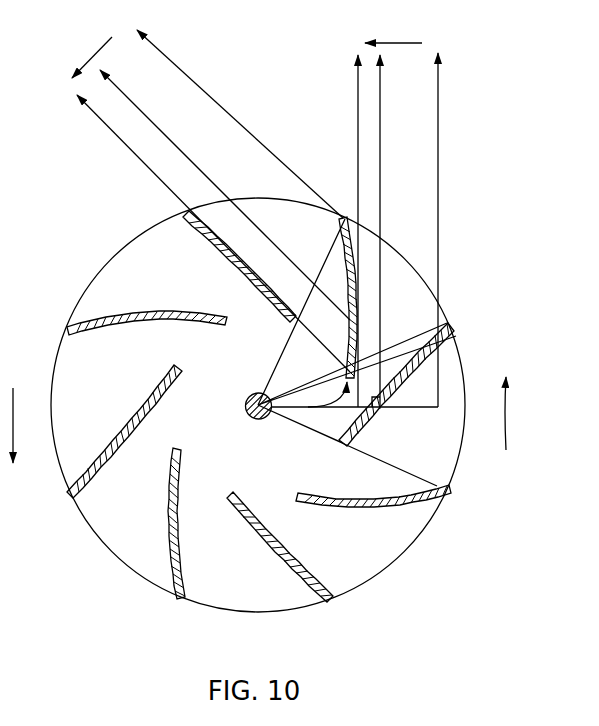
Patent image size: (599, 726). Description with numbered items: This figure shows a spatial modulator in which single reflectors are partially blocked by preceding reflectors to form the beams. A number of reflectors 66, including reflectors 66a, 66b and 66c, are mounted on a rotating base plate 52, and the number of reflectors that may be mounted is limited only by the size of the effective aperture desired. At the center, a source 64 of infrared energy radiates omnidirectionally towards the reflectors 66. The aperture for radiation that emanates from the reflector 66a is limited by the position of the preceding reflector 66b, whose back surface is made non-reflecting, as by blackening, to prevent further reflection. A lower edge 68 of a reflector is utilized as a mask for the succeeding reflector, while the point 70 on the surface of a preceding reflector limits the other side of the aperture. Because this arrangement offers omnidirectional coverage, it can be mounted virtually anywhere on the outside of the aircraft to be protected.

The rotating base plate 52 is at (424, 530).
The source of infrared energy 64 is at (245, 406).
The reflectors 66 is at (118, 312).
The reflector 66a is at (430, 384).
The preceding reflector 66b is at (339, 266).
The reflector 66c is at (197, 236).
The lower edge of a reflector 68 is at (295, 425).
The point on the surface of a preceding reflector 70 is at (362, 300).